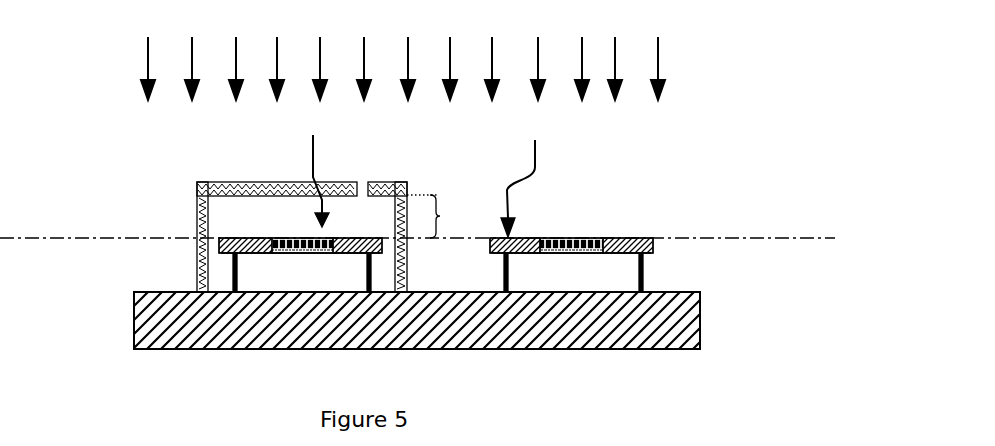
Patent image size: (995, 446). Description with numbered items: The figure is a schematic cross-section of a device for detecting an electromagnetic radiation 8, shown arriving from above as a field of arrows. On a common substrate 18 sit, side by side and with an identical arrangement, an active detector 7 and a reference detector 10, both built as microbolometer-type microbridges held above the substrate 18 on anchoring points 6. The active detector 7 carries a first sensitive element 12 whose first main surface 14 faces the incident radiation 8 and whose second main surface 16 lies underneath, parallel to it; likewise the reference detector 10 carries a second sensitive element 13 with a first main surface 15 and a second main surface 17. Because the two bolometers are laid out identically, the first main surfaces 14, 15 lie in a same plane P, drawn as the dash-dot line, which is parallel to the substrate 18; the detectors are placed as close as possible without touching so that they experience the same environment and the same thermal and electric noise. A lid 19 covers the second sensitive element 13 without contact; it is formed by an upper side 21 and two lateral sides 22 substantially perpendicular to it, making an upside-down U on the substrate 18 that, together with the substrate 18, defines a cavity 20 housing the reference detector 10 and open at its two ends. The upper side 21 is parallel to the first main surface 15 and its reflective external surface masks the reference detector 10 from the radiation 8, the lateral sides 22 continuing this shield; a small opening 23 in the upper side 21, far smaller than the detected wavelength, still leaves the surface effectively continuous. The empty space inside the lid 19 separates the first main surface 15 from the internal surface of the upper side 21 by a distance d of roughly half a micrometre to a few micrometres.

The anchoring points 6 is at (233, 268).
The active detector 7 is at (572, 202).
The electromagnetic radiation 8 is at (660, 72).
The reference detector 10 is at (319, 169).
The first sensitive element 12 is at (580, 199).
The second sensitive element 13 is at (195, 189).
The first main surface 14 is at (558, 237).
The first main surface 15 is at (308, 237).
The second main surface 16 is at (580, 255).
The second main surface 17 is at (310, 254).
The substrate 18 is at (523, 318).
The lid 19 is at (250, 183).
The cavity 20 is at (377, 220).
The upper side 21 is at (248, 182).
The lateral sides 22 is at (197, 214).
The opening 23 is at (360, 190).
The plane P is at (737, 237).
The distance d is at (432, 216).